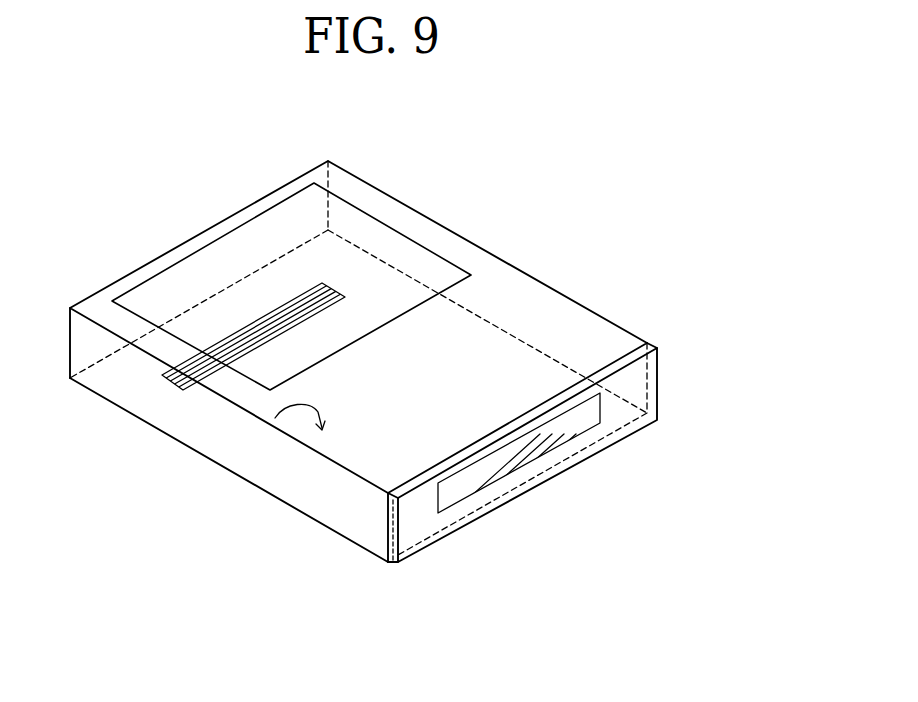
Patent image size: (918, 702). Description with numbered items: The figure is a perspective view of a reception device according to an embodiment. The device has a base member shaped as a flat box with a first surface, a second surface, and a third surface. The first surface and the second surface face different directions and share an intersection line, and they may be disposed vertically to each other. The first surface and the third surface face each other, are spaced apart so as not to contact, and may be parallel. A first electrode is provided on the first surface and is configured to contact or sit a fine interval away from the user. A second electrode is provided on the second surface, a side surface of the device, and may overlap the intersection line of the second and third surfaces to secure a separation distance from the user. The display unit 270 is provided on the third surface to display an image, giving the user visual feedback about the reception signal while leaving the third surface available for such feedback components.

The display unit 270 is at (393, 230).